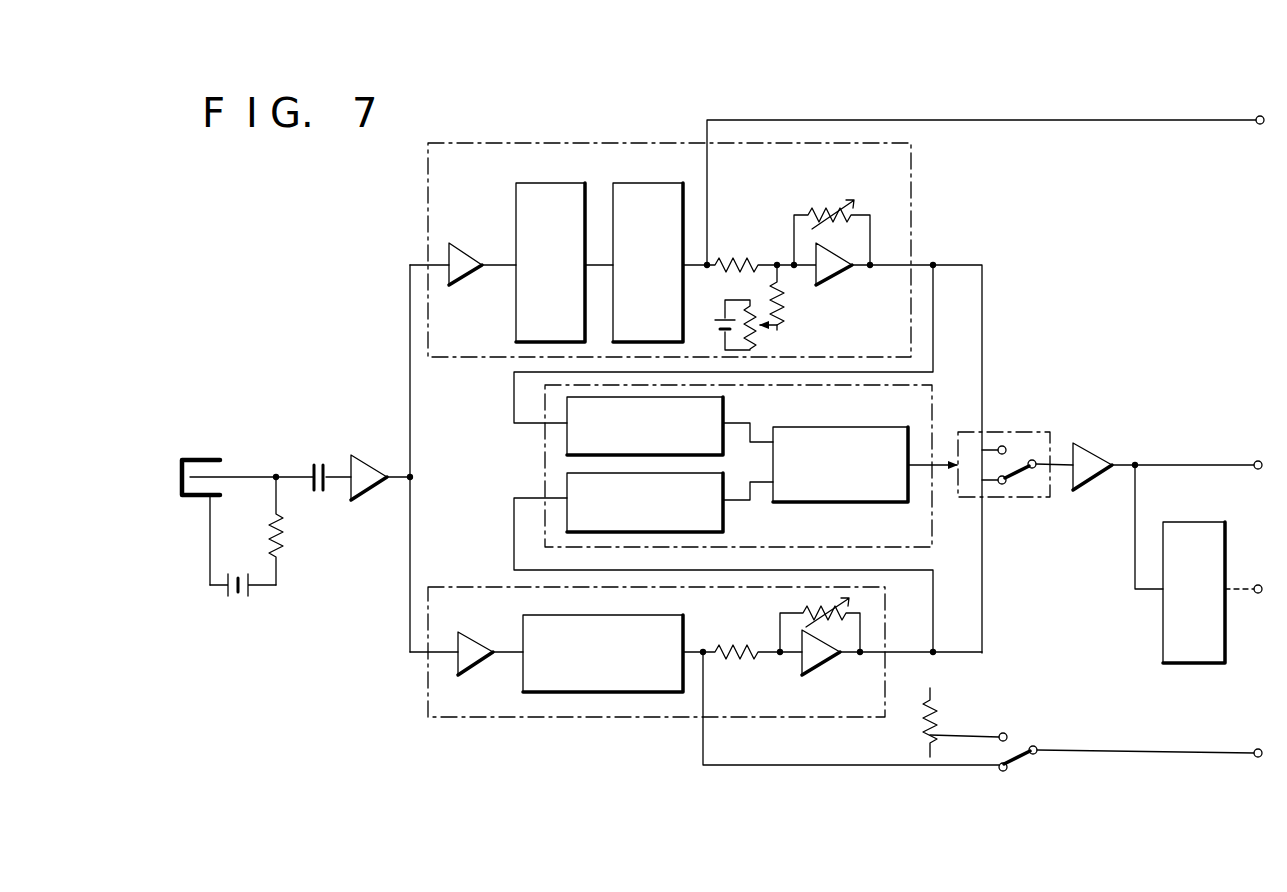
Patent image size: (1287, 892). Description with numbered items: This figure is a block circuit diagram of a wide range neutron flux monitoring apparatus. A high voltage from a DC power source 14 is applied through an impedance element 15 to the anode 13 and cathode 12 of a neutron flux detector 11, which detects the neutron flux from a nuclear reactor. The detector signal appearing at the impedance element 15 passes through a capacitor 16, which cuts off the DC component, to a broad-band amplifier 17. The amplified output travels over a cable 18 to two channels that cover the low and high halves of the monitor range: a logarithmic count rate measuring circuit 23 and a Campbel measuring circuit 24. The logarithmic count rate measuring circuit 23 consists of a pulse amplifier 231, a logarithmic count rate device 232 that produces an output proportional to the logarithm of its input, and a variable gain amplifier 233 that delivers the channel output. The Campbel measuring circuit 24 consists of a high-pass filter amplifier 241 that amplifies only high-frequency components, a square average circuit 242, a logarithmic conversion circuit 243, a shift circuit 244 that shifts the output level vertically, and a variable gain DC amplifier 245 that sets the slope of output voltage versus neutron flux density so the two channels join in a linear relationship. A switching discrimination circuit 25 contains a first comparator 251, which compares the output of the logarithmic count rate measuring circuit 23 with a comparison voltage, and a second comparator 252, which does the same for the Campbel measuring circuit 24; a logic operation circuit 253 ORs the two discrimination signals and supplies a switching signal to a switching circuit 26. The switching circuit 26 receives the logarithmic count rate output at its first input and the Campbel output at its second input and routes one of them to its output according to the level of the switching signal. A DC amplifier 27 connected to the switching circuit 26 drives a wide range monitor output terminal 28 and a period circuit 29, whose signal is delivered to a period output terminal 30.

The neutron flux detector 11 is at (201, 448).
The cathode 12 is at (214, 497).
The anode 13 is at (240, 474).
The DC power source 14 is at (241, 605).
The impedance element 15 is at (283, 538).
The capacitor 16 is at (317, 454).
The broad-band amplifier 17 is at (368, 482).
The cable 18 is at (412, 440).
The logarithmic count rate measuring circuit 23 is at (454, 587).
The pulse amplifier 231 is at (472, 660).
The logarithmic count rate device 232 is at (683, 630).
The variable gain amplifier 233 is at (826, 660).
The Campbel measuring circuit 24 is at (428, 222).
The high-pass filter amplifier 241 is at (468, 246).
The square average circuit 242 is at (550, 184).
The logarithmic conversion circuit 243 is at (657, 184).
The shift circuit 244 is at (781, 330).
The variable gain DC amplifier 245 is at (859, 213).
The switching discrimination circuit 25 is at (934, 545).
The first comparator 251 is at (717, 522).
The second comparator 252 is at (712, 408).
The logic operation circuit 253 is at (888, 430).
The switching circuit 26 is at (1019, 497).
The DC amplifier 27 is at (1093, 452).
The wide range monitor output terminal 28 is at (1258, 460).
The period circuit 29 is at (1166, 654).
The period output terminal 30 is at (1257, 594).